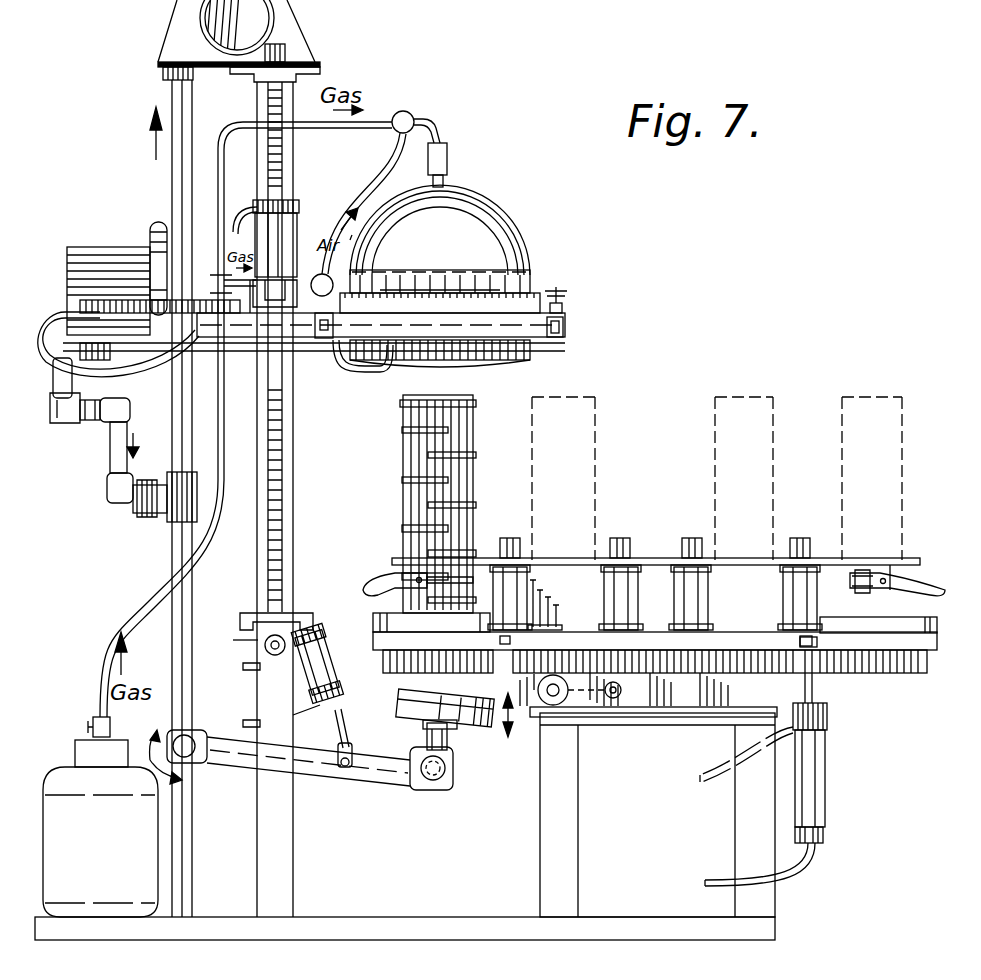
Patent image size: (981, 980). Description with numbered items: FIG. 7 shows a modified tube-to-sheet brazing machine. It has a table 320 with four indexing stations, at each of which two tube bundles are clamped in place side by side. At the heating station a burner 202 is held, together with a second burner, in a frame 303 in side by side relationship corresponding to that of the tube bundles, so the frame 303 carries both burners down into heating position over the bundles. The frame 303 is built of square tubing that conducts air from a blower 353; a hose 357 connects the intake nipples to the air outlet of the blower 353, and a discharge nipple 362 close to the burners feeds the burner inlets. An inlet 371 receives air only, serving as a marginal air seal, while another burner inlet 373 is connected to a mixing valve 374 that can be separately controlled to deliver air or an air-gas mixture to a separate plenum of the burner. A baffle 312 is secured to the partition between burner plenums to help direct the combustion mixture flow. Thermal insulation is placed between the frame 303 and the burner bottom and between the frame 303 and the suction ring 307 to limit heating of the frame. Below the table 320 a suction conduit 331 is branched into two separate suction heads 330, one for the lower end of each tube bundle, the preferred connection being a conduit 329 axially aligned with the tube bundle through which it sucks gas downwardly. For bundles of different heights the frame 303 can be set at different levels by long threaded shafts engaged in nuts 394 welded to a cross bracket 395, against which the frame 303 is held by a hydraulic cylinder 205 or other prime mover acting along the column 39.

The vertical column 39 is at (281, 574).
The burner 202 is at (457, 235).
The electrically controlled hydraulic cylinder 205 is at (280, 228).
The frame 303 is at (522, 338).
The suction ring 307 is at (470, 362).
The baffle 312 is at (350, 270).
The table 320 is at (852, 650).
The conduit 329 is at (452, 742).
The suction head 330 is at (422, 708).
The suction conduit 331 is at (380, 768).
The blower 353 is at (105, 270).
The hose 357 is at (103, 378).
The discharge nipple 362 is at (565, 308).
The burner inlet 371 is at (545, 288).
The burner inlet 373 is at (448, 168).
The mixing valve 374 is at (410, 113).
The nut 394 is at (283, 322).
The cross bracket 395 is at (250, 315).